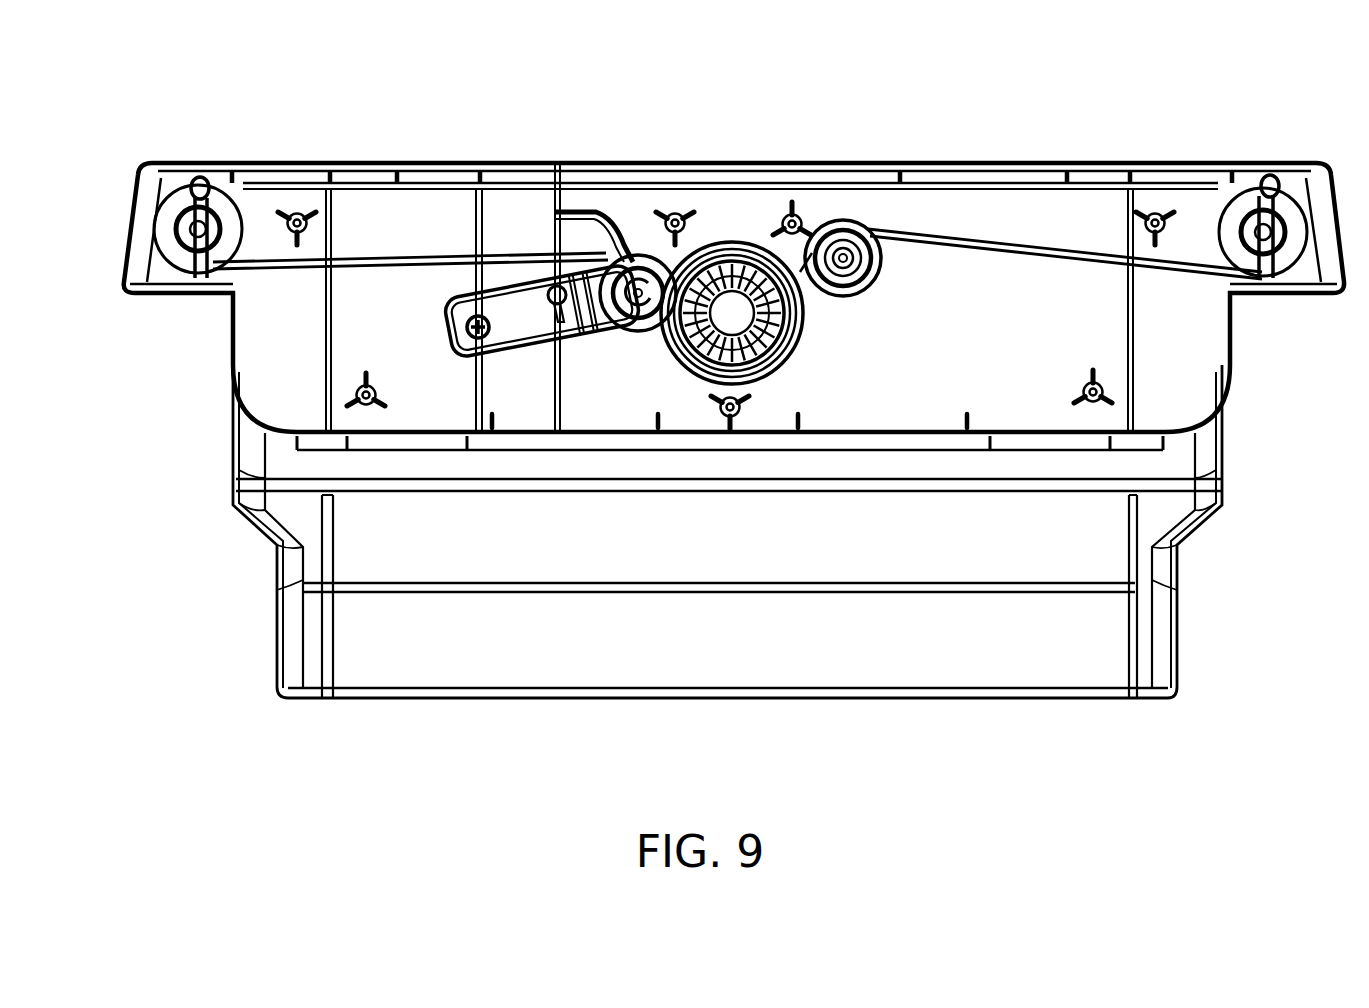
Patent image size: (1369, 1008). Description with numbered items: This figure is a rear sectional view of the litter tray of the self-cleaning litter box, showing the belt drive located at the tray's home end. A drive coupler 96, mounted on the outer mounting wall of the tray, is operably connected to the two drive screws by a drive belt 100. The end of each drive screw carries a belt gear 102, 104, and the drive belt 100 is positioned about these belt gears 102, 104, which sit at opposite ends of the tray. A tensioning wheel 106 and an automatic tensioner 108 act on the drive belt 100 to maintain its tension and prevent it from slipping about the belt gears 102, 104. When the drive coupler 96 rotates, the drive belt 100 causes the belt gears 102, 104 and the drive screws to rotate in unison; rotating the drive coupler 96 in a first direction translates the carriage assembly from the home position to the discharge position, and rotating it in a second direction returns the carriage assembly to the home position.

The drive coupler 96 is at (726, 242).
The drive belt 100 is at (1017, 243).
The belt gear 102 is at (181, 200).
The belt gear 104 is at (1283, 196).
The tensioning wheel 106 is at (852, 230).
The automatic tensioner 108 is at (508, 297).